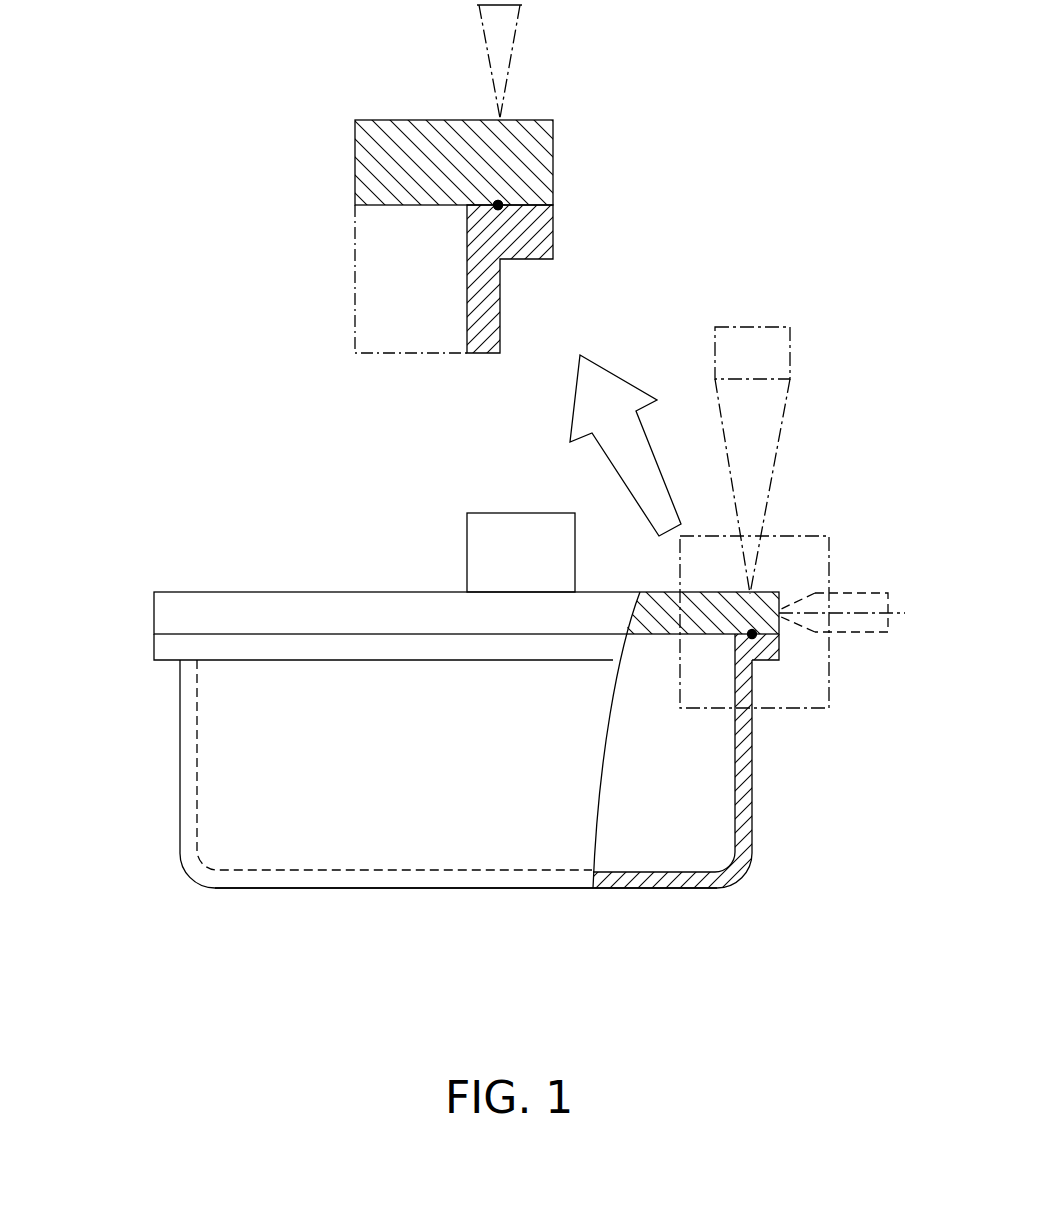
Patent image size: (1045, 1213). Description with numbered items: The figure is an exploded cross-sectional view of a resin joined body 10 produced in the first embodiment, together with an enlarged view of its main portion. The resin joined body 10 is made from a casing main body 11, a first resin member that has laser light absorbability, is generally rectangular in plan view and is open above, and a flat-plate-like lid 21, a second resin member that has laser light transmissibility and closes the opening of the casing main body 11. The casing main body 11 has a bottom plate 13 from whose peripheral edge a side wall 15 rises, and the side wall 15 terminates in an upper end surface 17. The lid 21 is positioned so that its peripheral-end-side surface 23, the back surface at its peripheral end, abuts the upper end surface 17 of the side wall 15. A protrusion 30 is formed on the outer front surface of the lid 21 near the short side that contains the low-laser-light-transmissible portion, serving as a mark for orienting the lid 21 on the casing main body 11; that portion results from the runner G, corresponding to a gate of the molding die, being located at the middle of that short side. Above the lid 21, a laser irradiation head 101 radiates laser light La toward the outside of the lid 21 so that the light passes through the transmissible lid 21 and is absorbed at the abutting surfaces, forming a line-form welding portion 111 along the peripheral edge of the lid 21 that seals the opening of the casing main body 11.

The resin joined body 10 is at (157, 555).
The casing main body 11 is at (178, 773).
The bottom plate 13 is at (481, 889).
The side wall 15 is at (498, 322).
The upper end surface 17 is at (512, 205).
The lid 21 is at (297, 588).
The peripheral-end-side surface 23 is at (518, 206).
The protrusion 30 is at (467, 558).
The laser irradiation head 101 is at (790, 360).
The welding portion 111 is at (498, 203).
The laser light La is at (508, 42).
The runner G is at (858, 593).